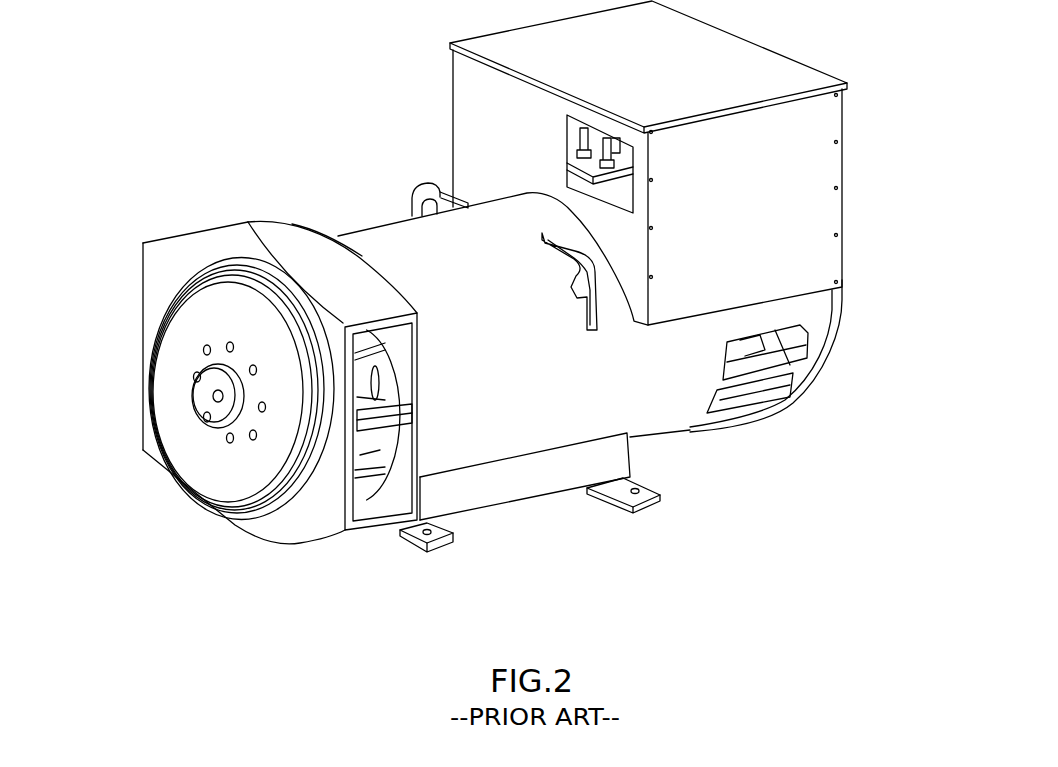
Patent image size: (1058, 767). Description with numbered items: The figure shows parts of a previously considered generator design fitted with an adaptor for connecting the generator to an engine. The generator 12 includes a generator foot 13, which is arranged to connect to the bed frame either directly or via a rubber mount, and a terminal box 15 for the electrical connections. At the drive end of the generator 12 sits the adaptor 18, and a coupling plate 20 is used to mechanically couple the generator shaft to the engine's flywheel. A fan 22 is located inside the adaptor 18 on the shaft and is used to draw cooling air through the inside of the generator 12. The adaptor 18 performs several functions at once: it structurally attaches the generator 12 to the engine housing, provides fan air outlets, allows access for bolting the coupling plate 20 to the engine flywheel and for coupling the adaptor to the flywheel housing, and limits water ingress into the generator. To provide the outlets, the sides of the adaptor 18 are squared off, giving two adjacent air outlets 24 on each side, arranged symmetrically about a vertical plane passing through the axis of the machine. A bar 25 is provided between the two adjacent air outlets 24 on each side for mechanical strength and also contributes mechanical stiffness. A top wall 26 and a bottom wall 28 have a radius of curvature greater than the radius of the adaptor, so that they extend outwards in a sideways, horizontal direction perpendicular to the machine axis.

The generator 12 is at (812, 368).
The generator foot 13 is at (537, 487).
The terminal box 15 is at (820, 172).
The adaptor 18 is at (155, 163).
The coupling plate 20 is at (180, 360).
The fan 22 is at (366, 443).
The air outlets 24 is at (140, 303).
The bar 25 is at (365, 434).
The top wall 26 is at (277, 240).
The bottom wall 28 is at (237, 525).